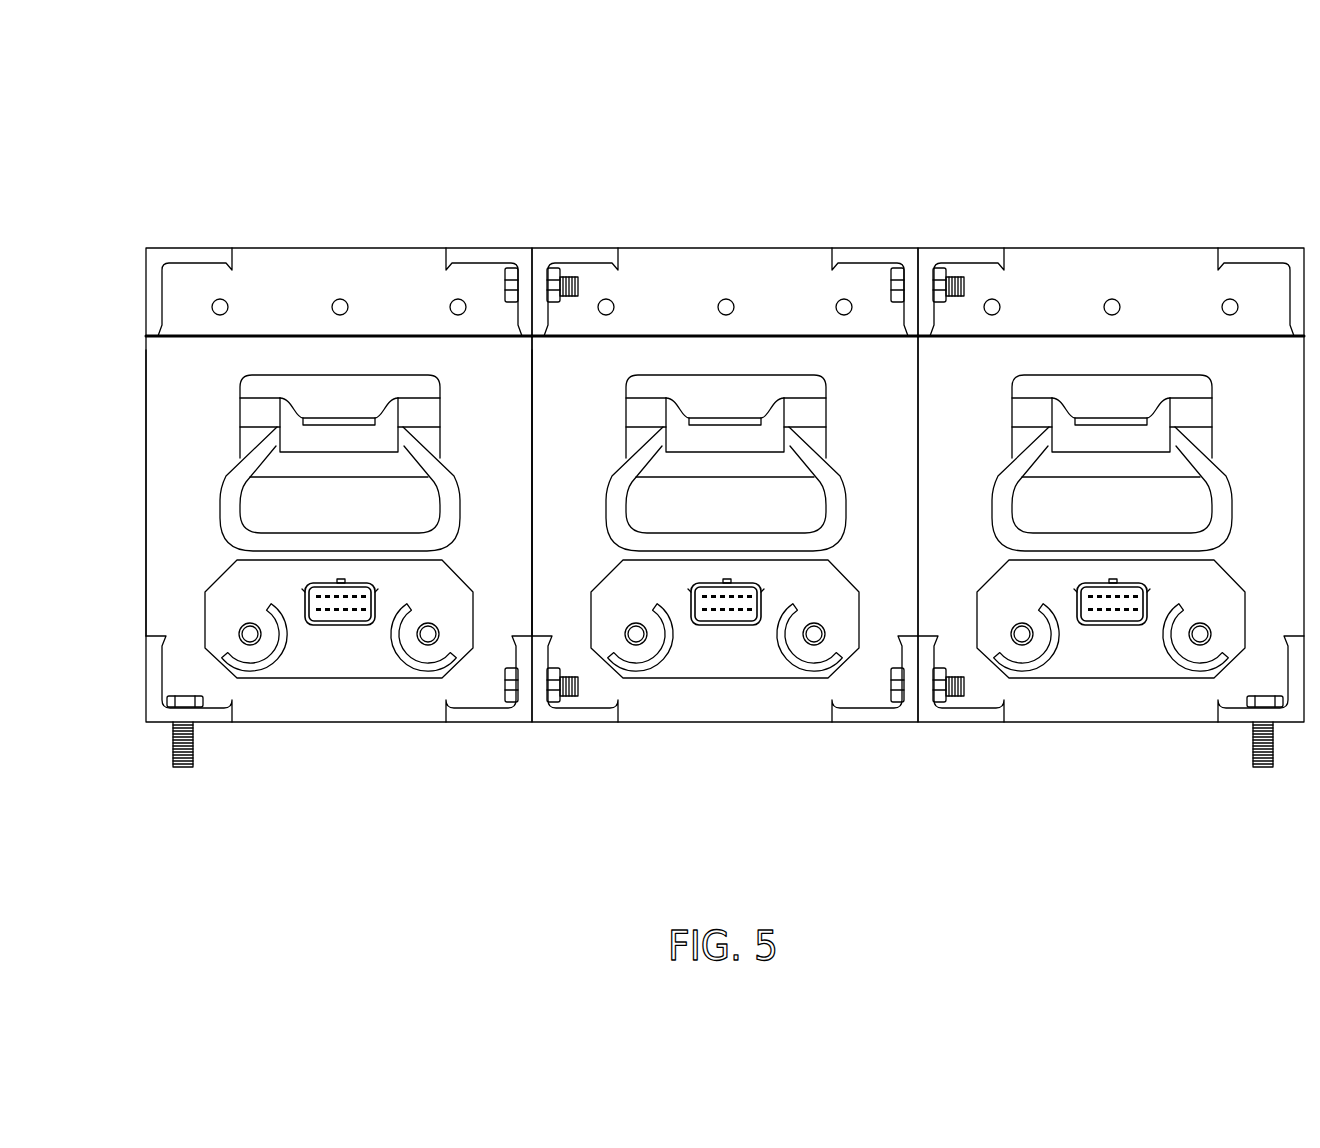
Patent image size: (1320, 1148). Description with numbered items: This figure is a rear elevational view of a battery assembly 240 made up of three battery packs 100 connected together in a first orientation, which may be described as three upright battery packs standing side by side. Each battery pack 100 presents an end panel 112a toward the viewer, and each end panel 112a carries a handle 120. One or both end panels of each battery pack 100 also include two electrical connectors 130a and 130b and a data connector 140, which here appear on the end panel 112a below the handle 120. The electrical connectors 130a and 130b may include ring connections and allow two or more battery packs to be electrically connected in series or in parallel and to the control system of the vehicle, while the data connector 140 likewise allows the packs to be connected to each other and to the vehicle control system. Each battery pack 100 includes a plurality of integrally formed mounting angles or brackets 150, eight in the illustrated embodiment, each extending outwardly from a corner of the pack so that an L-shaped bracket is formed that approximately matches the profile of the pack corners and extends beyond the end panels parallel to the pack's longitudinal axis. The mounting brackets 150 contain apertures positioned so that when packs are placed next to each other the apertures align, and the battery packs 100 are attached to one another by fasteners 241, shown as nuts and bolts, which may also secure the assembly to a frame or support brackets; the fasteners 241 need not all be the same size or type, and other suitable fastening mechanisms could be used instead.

The battery assembly 240 is at (156, 110).
The battery pack 100 is at (340, 247).
The mounting bracket 150 is at (191, 257).
The end panel 112a is at (218, 414).
The handle 120 is at (452, 497).
The electrical connector 130a is at (250, 634).
The electrical connector 130b is at (428, 634).
The data connector 140 is at (332, 614).
The fastener 241 is at (503, 285).